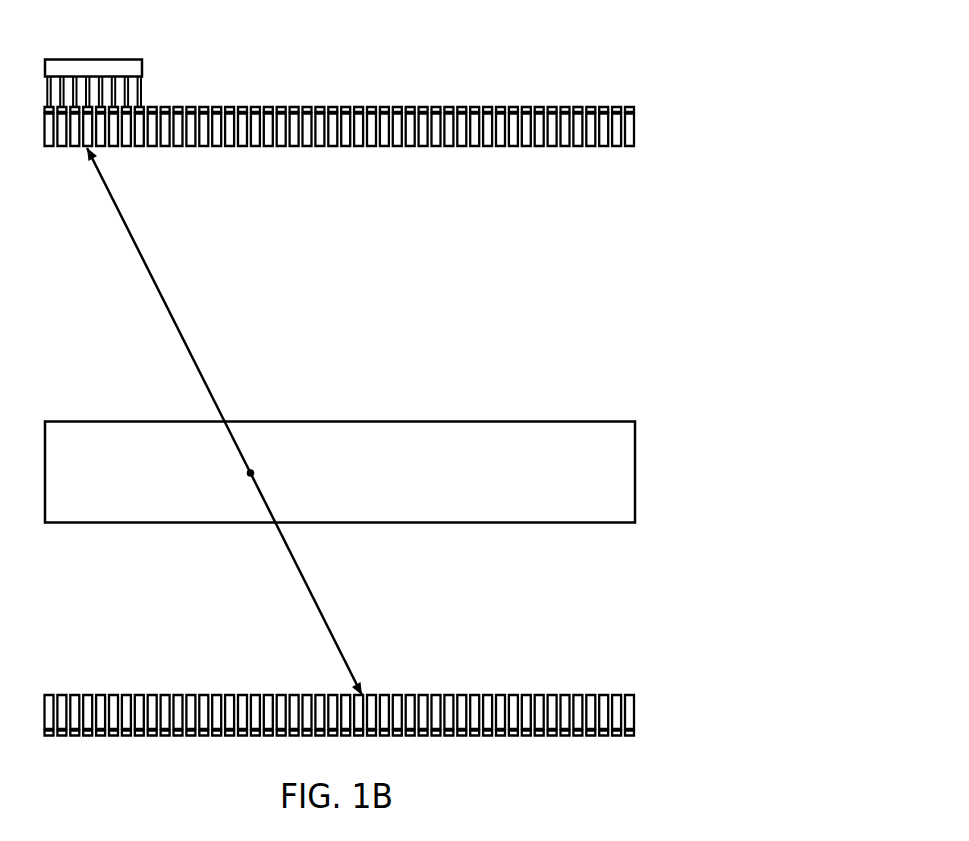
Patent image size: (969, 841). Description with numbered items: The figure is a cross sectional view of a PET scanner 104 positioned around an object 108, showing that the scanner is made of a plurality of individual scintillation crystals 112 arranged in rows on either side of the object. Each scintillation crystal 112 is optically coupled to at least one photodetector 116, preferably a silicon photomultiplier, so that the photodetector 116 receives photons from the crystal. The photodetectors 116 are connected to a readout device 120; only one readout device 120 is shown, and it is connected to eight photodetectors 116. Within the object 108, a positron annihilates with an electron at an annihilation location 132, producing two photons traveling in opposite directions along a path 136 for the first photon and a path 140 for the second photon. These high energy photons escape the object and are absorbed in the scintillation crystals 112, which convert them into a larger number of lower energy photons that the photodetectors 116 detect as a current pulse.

The PET scanner 104 is at (307, 97).
The object 108 is at (520, 422).
The scintillation crystal 112 is at (448, 146).
The photodetector 116 is at (477, 108).
The readout device 120 is at (132, 58).
The annihilation location 132 is at (251, 470).
The path for a first photon 136 is at (148, 266).
The path for a second photon 140 is at (272, 507).